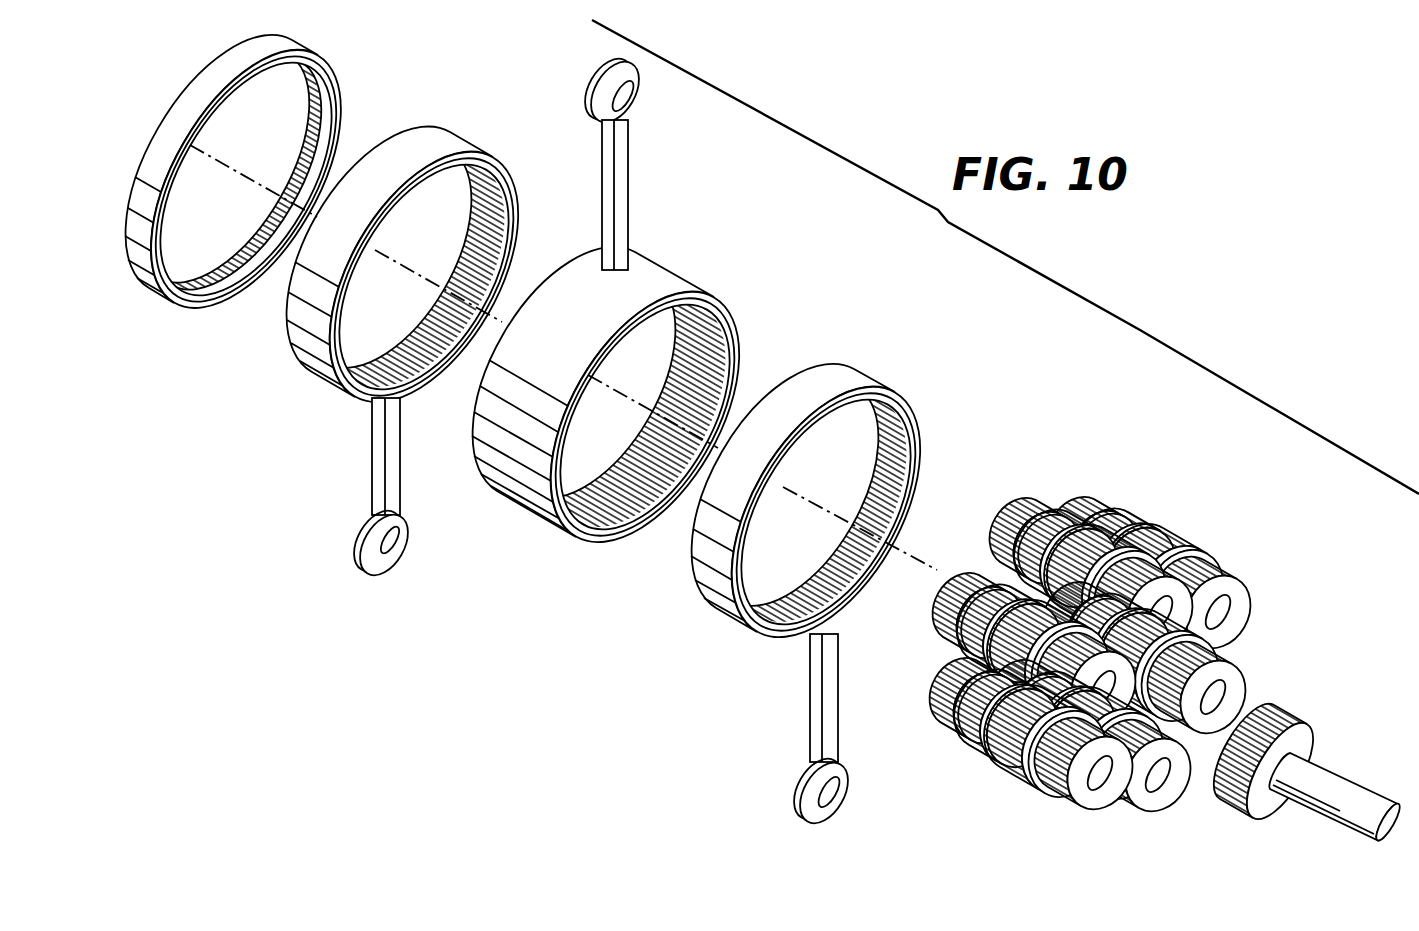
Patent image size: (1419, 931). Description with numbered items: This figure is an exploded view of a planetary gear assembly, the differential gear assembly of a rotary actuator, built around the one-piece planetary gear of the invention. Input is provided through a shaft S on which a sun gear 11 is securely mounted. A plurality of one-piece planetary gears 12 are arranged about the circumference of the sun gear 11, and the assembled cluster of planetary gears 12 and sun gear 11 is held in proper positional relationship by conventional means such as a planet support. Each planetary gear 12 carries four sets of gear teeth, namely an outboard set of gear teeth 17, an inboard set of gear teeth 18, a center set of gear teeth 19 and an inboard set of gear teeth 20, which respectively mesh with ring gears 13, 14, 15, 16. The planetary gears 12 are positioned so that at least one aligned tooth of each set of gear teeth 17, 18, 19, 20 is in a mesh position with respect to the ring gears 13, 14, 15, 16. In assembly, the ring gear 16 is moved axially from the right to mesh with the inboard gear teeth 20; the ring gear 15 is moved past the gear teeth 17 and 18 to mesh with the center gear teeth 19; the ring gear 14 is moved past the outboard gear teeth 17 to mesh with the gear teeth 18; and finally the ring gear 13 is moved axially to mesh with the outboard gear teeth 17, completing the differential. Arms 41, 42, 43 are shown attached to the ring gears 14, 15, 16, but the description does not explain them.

The sun gear 11 is at (1308, 731).
The one-piece planetary gears 12 is at (1078, 648).
The ring gear 13 is at (312, 118).
The ring gear 14 is at (503, 228).
The ring gear 15 is at (718, 350).
The ring gear 16 is at (905, 462).
The outboard set of gear teeth 17 is at (930, 722).
The inboard set of gear teeth 18 is at (958, 742).
The center set of gear teeth 19 is at (1004, 764).
The inboard set of gear teeth 20 is at (1050, 797).
The arm 41 is at (372, 462).
The arm 42 is at (632, 178).
The arm 43 is at (810, 708).
The shaft S is at (1366, 794).